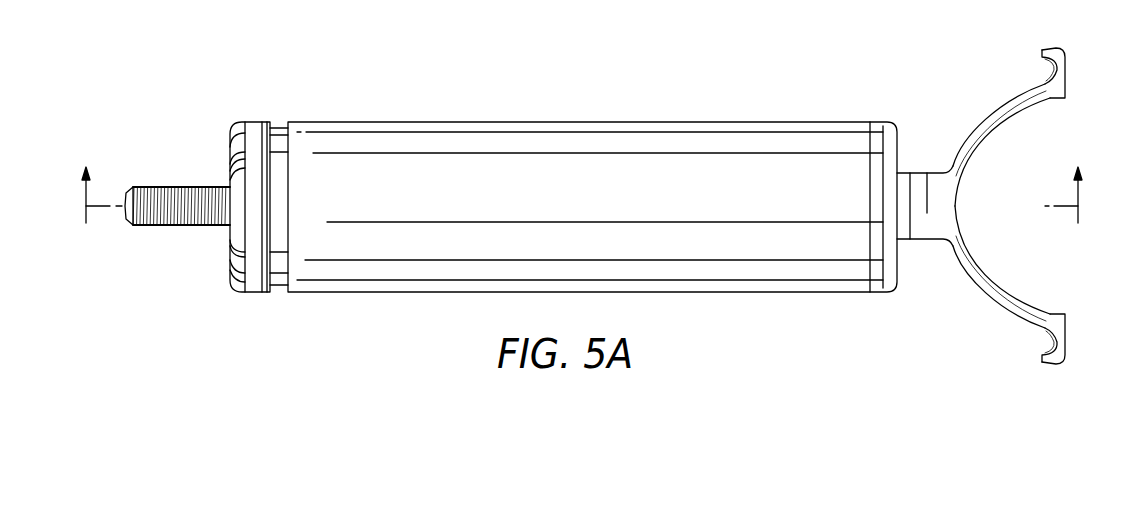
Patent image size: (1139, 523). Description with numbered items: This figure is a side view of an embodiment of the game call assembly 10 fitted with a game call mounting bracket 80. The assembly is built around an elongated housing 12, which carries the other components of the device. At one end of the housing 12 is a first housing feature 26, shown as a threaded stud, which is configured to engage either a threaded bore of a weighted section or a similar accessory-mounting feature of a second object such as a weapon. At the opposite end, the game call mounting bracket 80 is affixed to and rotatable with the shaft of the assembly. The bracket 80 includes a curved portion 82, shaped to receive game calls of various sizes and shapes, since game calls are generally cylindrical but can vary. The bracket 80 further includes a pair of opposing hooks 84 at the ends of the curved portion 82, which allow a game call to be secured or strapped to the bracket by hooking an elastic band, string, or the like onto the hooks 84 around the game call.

The game call assembly 10 is at (800, 88).
The housing 12 is at (410, 140).
The first housing feature 26 is at (177, 185).
The game call mounting bracket 80 is at (976, 120).
The curved portion 82 is at (988, 281).
The opposing hooks 84 is at (1066, 72).